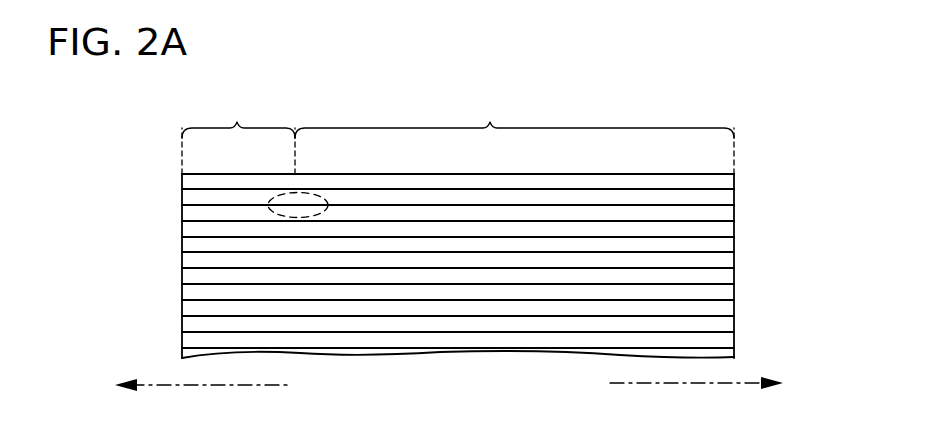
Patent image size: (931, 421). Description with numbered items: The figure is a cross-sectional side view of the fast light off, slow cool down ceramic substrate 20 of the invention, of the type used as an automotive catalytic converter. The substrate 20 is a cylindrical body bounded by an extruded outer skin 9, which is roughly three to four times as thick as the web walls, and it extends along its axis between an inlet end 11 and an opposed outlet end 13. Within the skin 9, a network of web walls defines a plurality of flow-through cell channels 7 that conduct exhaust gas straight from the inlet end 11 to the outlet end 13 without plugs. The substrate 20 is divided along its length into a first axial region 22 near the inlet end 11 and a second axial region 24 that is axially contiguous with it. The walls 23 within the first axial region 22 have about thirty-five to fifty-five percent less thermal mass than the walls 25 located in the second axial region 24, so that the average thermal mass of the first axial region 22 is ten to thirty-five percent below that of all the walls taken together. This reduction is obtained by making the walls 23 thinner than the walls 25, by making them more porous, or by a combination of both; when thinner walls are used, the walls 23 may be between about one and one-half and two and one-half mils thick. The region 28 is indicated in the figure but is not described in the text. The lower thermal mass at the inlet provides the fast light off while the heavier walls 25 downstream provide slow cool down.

The fast light off, slow cool down ceramic substrate 20 is at (148, 170).
The extruded outer skin 9 is at (415, 173).
The flow-through cell channels 7 is at (192, 200).
The first axial region 22 is at (238, 137).
The second axial region 24 is at (514, 136).
The interface region 28 is at (290, 216).
The inlet end 11 is at (162, 280).
The outlet end 13 is at (766, 251).
The walls in first axial region 23 is at (194, 302).
The walls in second axial region 25 is at (716, 336).